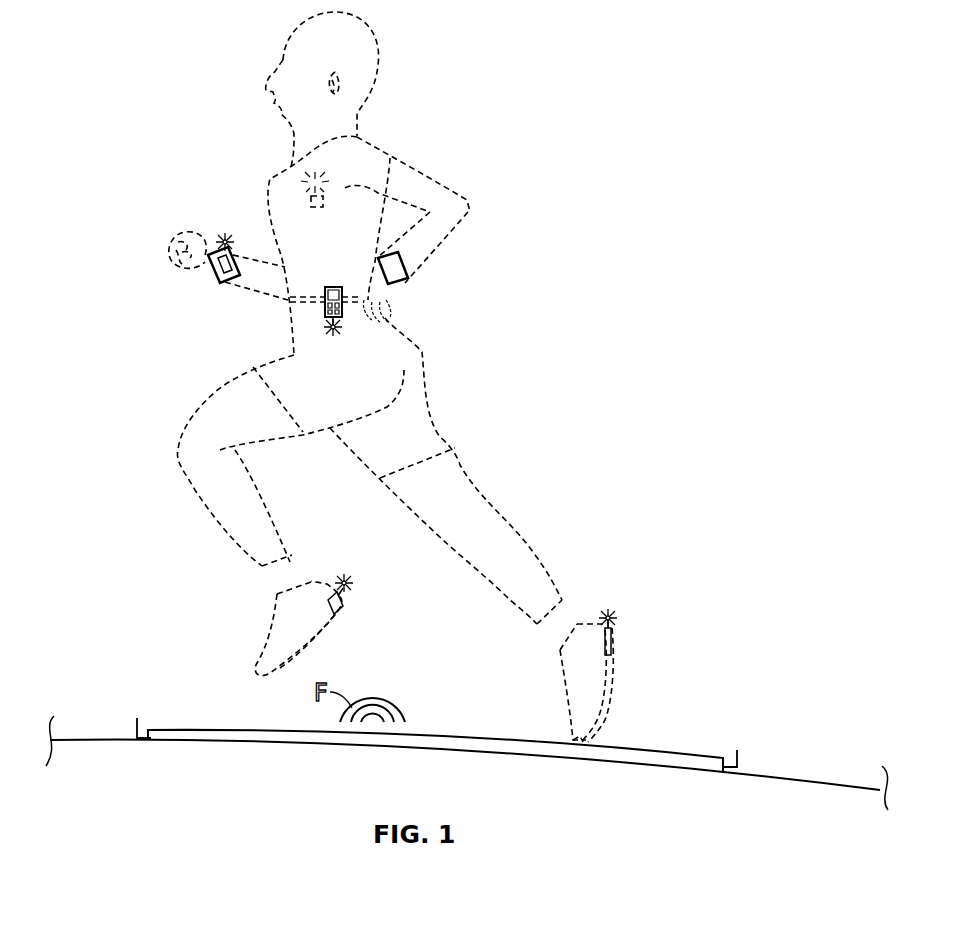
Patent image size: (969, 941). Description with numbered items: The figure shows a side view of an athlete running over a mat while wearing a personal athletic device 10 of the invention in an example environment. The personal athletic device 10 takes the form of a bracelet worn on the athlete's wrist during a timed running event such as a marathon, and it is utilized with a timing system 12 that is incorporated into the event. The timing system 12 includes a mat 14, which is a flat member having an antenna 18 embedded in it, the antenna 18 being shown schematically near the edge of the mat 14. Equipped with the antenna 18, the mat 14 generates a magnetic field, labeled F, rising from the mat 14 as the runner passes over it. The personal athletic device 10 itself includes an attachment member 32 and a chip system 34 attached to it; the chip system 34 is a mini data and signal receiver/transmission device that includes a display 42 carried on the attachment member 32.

The personal athletic device 10 is at (201, 269).
The timing system 12 is at (146, 690).
The mat 14 is at (664, 758).
The antenna 18 is at (136, 722).
The attachment member 32 is at (193, 290).
The chip system 34 is at (223, 238).
The display 42 is at (208, 268).